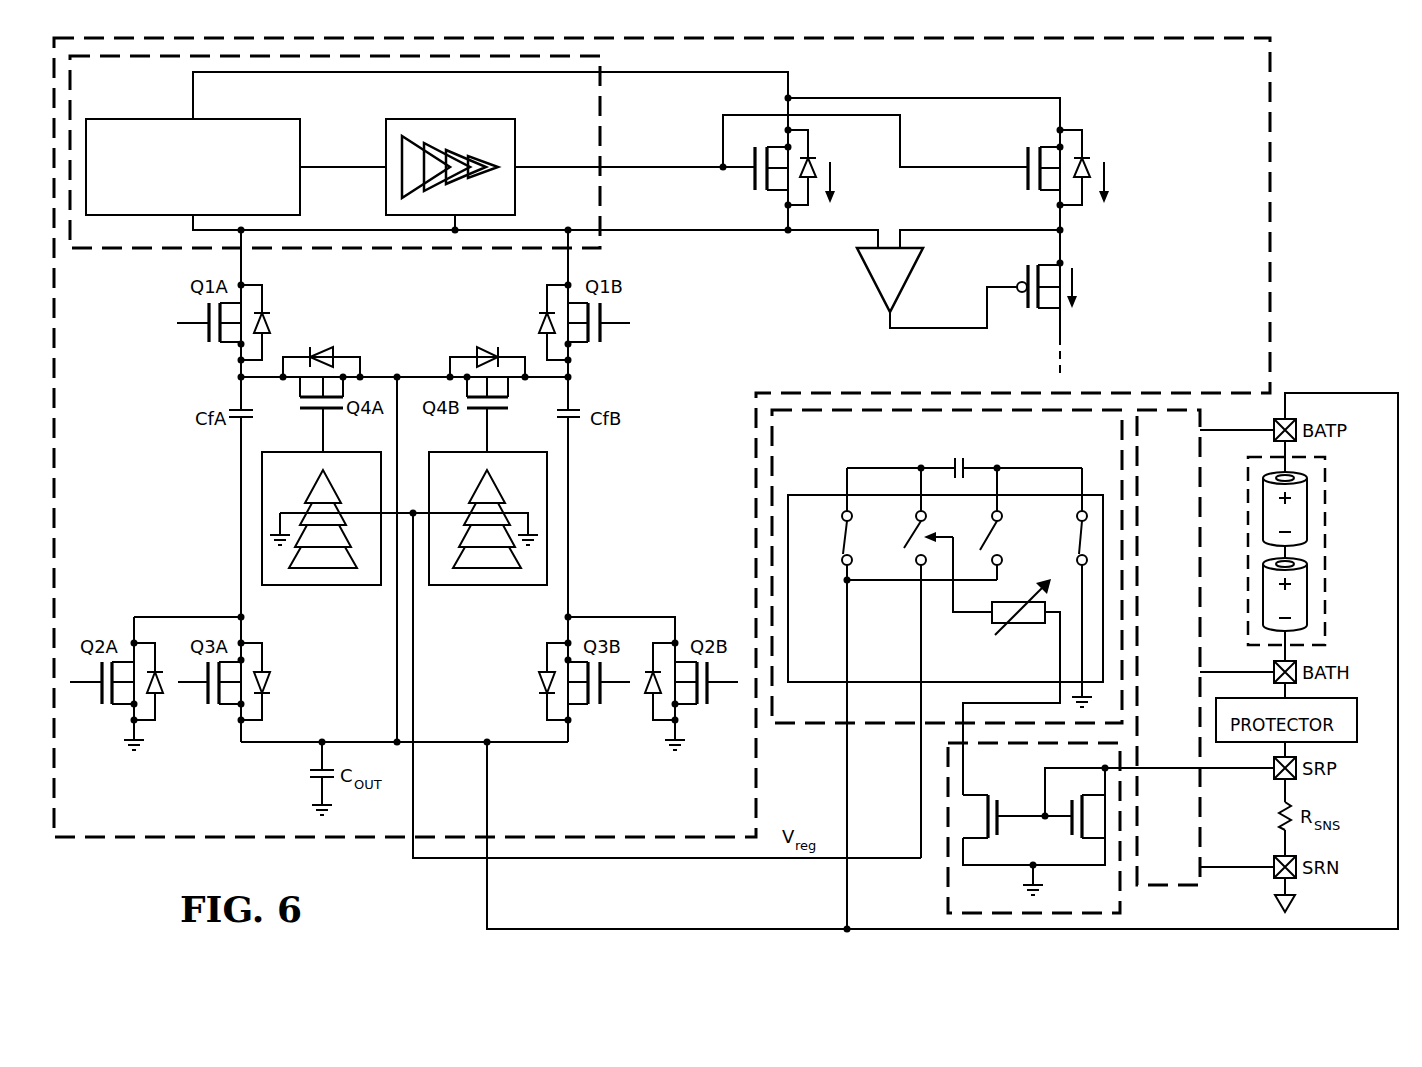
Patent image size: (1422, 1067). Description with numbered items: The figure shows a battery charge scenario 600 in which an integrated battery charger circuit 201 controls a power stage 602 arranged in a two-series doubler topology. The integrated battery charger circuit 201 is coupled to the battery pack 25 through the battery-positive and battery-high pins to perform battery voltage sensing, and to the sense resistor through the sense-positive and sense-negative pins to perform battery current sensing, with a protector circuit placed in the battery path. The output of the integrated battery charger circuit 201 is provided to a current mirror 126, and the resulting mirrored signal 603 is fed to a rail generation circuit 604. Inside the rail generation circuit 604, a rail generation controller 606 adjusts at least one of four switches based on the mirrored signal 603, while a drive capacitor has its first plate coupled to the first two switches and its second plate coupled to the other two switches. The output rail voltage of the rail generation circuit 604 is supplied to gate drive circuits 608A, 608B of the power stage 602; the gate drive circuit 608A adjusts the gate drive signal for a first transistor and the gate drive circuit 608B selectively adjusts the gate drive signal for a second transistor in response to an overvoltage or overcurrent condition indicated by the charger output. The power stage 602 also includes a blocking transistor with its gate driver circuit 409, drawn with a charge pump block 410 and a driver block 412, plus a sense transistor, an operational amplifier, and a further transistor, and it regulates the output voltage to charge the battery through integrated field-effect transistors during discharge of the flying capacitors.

The battery charge scenario 600 is at (1376, 91).
The power stage 602 is at (1195, 91).
The gate driver circuit 409 is at (130, 258).
The charge pump 410 is at (138, 119).
The driver buffer 412 is at (515, 140).
The gate drive circuit 608A is at (310, 587).
The gate drive circuit 608B is at (498, 587).
The rail generation circuit 604 is at (803, 735).
The rail generation controller 606 is at (1015, 602).
The current mirror 126 is at (948, 880).
The mirrored signal 603 is at (965, 775).
The integrated battery charger circuit 201 is at (1190, 666).
The battery pack 25 is at (1312, 551).